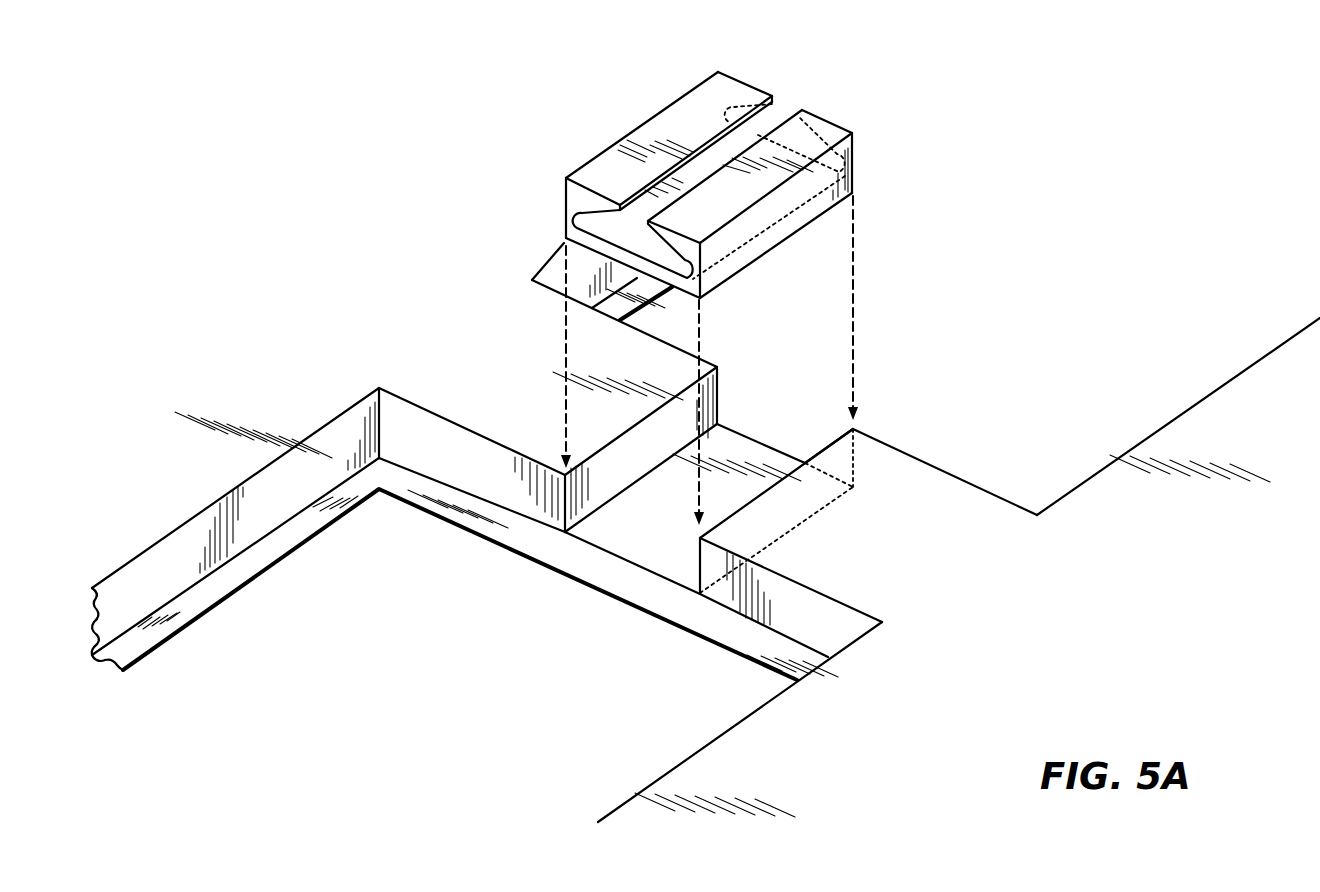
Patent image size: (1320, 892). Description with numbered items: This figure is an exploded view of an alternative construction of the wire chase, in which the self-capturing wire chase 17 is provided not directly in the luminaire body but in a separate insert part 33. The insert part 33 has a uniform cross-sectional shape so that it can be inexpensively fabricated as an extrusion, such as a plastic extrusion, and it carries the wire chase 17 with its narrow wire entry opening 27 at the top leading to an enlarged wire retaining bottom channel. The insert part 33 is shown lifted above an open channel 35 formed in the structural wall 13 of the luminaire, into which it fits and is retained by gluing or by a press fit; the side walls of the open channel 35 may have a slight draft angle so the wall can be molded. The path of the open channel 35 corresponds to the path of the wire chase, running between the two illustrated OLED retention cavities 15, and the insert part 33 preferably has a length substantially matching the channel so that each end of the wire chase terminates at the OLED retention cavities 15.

The structural wall 13 is at (935, 553).
The OLED retention cavity 15 is at (710, 718).
The self-capturing wire chase 17 is at (597, 225).
The wire entry opening 27 is at (703, 172).
The insert part 33 is at (825, 203).
The open channel 35 is at (730, 497).